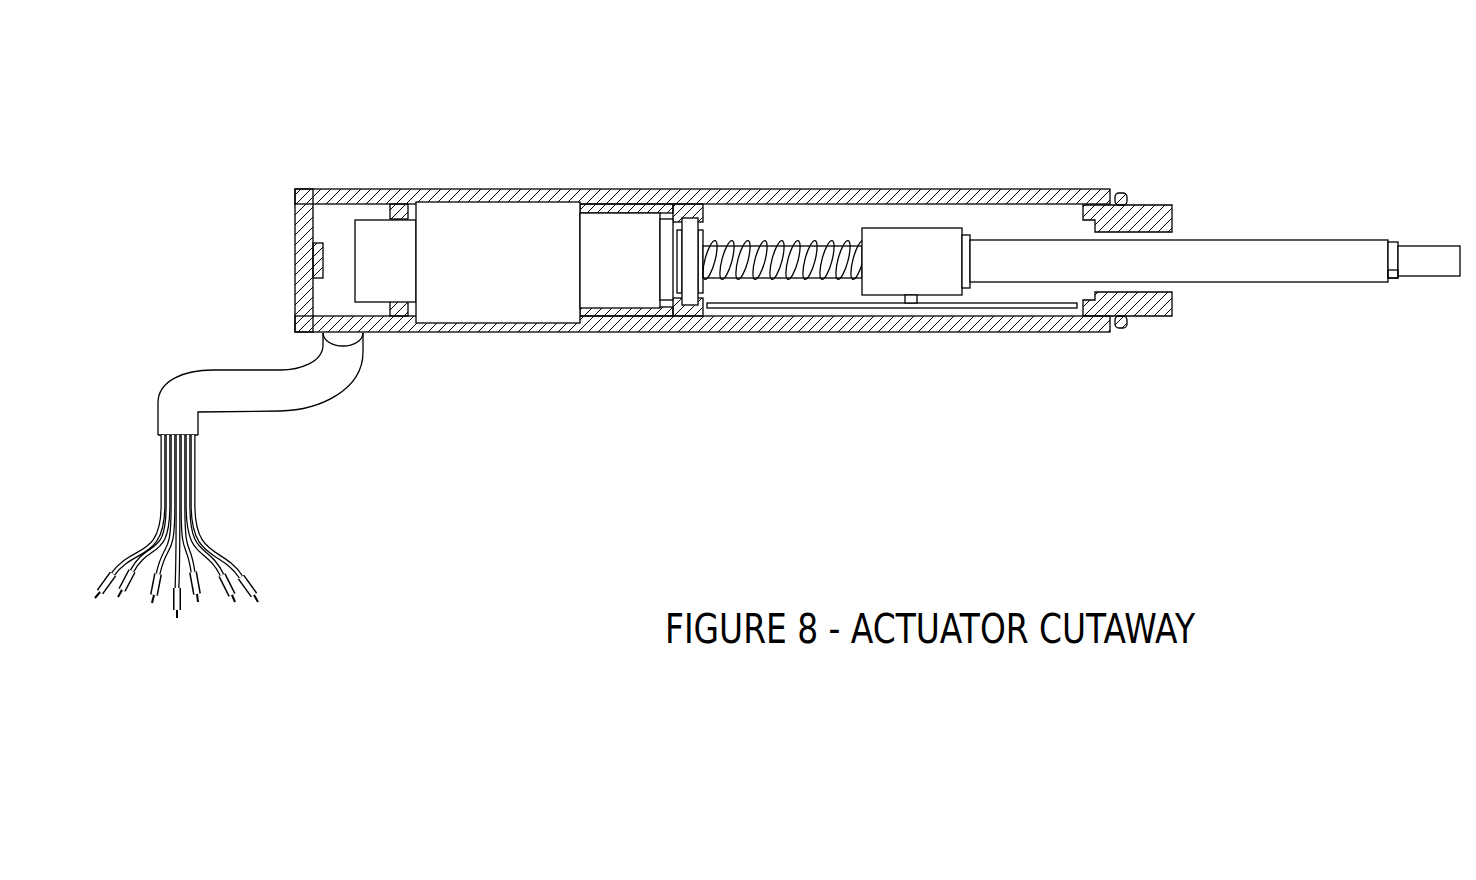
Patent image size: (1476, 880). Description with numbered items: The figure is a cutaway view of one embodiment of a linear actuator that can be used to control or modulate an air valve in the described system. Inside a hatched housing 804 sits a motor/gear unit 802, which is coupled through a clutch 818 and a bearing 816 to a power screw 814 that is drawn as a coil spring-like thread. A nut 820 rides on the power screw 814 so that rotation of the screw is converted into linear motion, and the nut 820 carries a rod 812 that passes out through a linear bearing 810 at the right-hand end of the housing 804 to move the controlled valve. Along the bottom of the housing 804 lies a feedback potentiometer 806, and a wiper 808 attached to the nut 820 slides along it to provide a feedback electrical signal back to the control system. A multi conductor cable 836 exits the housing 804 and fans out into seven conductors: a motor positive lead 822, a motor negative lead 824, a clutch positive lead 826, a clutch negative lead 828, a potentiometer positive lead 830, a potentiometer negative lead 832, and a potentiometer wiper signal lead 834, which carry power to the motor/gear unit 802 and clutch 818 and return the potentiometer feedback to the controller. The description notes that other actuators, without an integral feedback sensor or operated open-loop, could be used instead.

The motor/gear unit 802 is at (533, 292).
The housing 804 is at (692, 327).
The feedback potentiometer 806 is at (820, 308).
The wiper 808 is at (910, 297).
The linear bearing 810 is at (1138, 285).
The rod 812 is at (1362, 249).
The power screw 814 is at (788, 257).
The bearing 816 is at (693, 230).
The clutch 818 is at (600, 231).
The nut 820 is at (907, 235).
The motor + wire 822 is at (258, 602).
The motor - wire 824 is at (235, 602).
The clutch + wire 826 is at (198, 602).
The clutch - wire 828 is at (177, 618).
The potentiometer + wire 830 is at (152, 603).
The potentiometer - wire 832 is at (118, 597).
The potentiometer wiper signal wire 834 is at (95, 598).
The multi conductor cable 836 is at (272, 395).